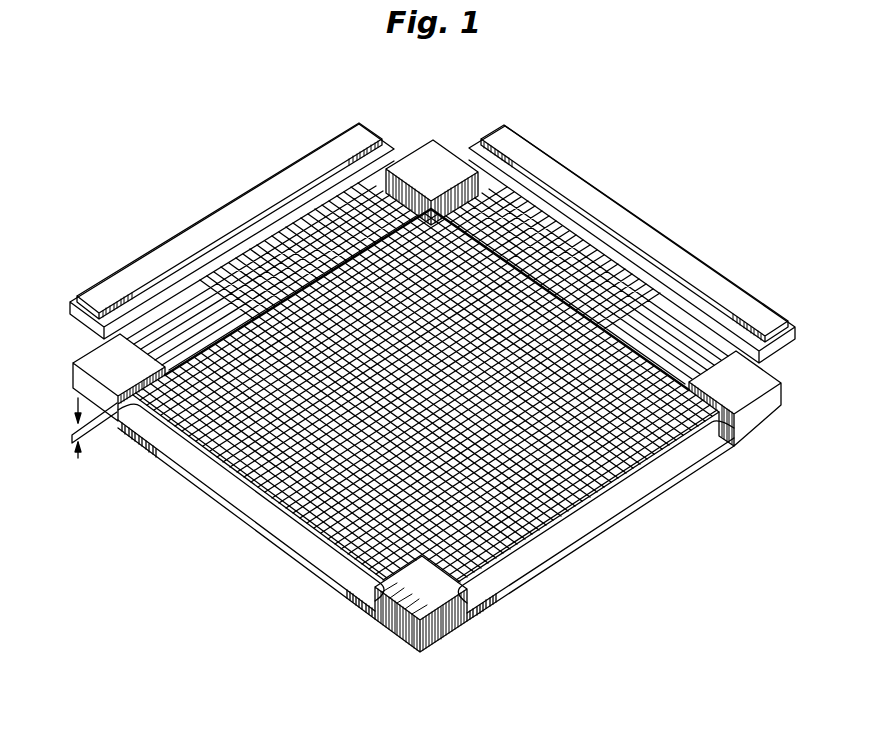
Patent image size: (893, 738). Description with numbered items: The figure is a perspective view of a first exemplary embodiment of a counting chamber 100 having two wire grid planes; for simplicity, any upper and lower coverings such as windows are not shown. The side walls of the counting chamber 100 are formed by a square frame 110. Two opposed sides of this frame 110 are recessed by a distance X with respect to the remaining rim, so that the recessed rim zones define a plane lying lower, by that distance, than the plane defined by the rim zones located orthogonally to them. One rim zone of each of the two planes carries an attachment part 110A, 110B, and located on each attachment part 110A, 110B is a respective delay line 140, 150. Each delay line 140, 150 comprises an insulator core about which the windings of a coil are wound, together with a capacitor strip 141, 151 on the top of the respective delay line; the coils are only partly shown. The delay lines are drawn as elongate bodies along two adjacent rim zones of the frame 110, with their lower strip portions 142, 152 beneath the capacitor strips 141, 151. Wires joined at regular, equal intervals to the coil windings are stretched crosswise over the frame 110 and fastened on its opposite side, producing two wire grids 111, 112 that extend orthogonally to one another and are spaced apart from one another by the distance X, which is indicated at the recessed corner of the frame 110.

The counting chamber 100 is at (432, 375).
The square frame 110 is at (426, 375).
The attachment part 110A is at (484, 170).
The attachment part 110B is at (110, 330).
The wire grid 111 is at (600, 497).
The wire grid 112 is at (253, 508).
The delay line 140 is at (233, 219).
The capacitor strip 141 is at (245, 215).
The rail base strip 142 is at (380, 148).
The delay line 150 is at (632, 243).
The capacitor strip 151 is at (607, 214).
The rail base strip 152 is at (689, 258).